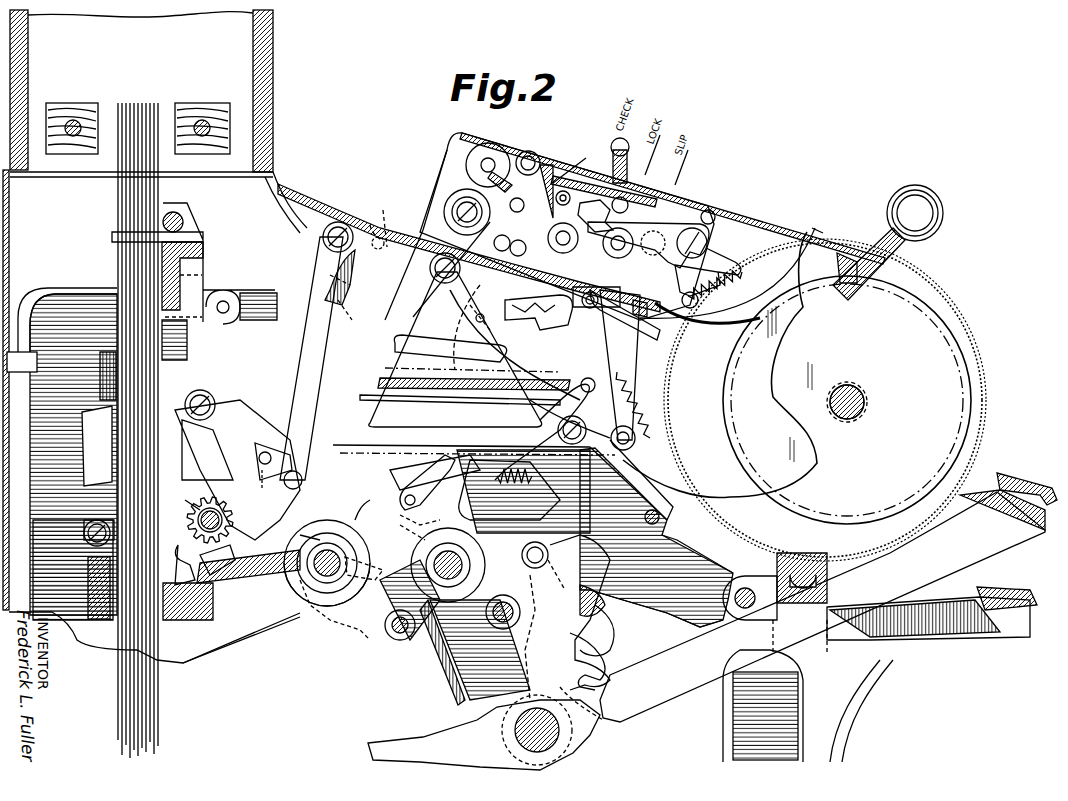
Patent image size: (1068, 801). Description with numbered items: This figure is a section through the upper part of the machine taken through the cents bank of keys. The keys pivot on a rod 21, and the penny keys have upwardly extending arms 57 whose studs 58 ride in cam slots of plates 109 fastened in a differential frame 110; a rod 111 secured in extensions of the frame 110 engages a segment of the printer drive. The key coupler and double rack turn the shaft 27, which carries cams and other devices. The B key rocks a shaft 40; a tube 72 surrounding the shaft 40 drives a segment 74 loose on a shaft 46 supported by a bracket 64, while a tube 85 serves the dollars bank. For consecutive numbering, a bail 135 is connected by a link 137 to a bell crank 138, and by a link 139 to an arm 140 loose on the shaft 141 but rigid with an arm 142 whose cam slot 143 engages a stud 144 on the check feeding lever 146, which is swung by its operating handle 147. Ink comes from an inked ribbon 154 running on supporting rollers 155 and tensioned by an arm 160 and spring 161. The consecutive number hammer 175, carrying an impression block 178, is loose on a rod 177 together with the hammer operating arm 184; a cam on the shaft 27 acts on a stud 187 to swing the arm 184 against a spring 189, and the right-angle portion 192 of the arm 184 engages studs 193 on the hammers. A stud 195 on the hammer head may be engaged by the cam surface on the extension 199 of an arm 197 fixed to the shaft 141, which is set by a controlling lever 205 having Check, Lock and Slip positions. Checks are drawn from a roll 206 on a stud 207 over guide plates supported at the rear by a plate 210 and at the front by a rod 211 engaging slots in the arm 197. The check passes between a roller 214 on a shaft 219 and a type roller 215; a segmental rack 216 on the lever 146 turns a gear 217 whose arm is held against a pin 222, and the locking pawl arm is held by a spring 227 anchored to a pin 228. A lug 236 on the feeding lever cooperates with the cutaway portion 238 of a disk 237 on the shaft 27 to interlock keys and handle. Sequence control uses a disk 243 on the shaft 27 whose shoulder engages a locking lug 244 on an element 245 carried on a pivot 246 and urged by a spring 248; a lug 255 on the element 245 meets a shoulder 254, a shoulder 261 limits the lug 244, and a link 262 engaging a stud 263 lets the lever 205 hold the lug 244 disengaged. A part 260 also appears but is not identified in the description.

The rod 21 is at (515, 732).
The shaft 27 is at (364, 560).
The shaft 40 is at (210, 504).
The shaft 46 is at (445, 580).
The upwardly extending arms 57 is at (569, 617).
The studs 58 is at (548, 555).
The bracket 64 is at (932, 613).
The tube 72 is at (217, 560).
The segment 74 is at (828, 597).
The tube 85 is at (190, 530).
The plates 109 is at (560, 580).
The differential frame 110 is at (430, 615).
The rod 111 is at (402, 642).
The bail 135 is at (582, 165).
The link 137 is at (604, 204).
The bell crank 138 is at (340, 638).
The link 139 is at (636, 390).
The arm 140 is at (586, 430).
The shaft 141 is at (630, 452).
The arm 142 is at (410, 505).
The cam slot 143 is at (427, 494).
The stud 144 is at (485, 408).
The check feeding lever 146 is at (720, 365).
The operating handle 147 is at (888, 242).
The inked ribbon 154 is at (508, 176).
The supporting rollers 155 is at (538, 222).
The arm 160 is at (722, 258).
The spring 161 is at (686, 312).
The consecutive number hammer 175 is at (455, 340).
The rod 177 is at (388, 210).
The impression block 178 is at (575, 243).
The arm 184 is at (322, 383).
The stud 187 is at (327, 562).
The spring 189 is at (390, 478).
The portion 192 is at (338, 306).
The studs 193 is at (332, 296).
The stud 195 is at (576, 312).
The arm 197 is at (660, 365).
The extension 199 is at (540, 355).
The controlling lever 205 is at (616, 139).
The roll 206 is at (915, 495).
The stud 207 is at (870, 415).
The plate 210 is at (352, 212).
The rod 211 is at (625, 252).
The roller 214 is at (463, 319).
The roller 215 is at (450, 193).
The segmental rack 216 is at (650, 410).
The gear 217 is at (472, 322).
The shaft 219 is at (500, 228).
The pin 222 is at (385, 238).
The spring 227 is at (330, 283).
The pin 228 is at (385, 222).
The lug 236 is at (400, 512).
The disk 237 is at (315, 640).
The cutaway portion 238 is at (408, 527).
The disk 243 is at (318, 620).
The lug 244 is at (760, 285).
The element 245 is at (260, 468).
The pivot 246 is at (345, 537).
The spring 248 is at (282, 445).
The shoulder 254 is at (232, 495).
The lug 255 is at (248, 565).
The bar 260 is at (472, 362).
The shoulder 261 is at (368, 498).
The link 262 is at (474, 381).
The stud 263 is at (460, 405).